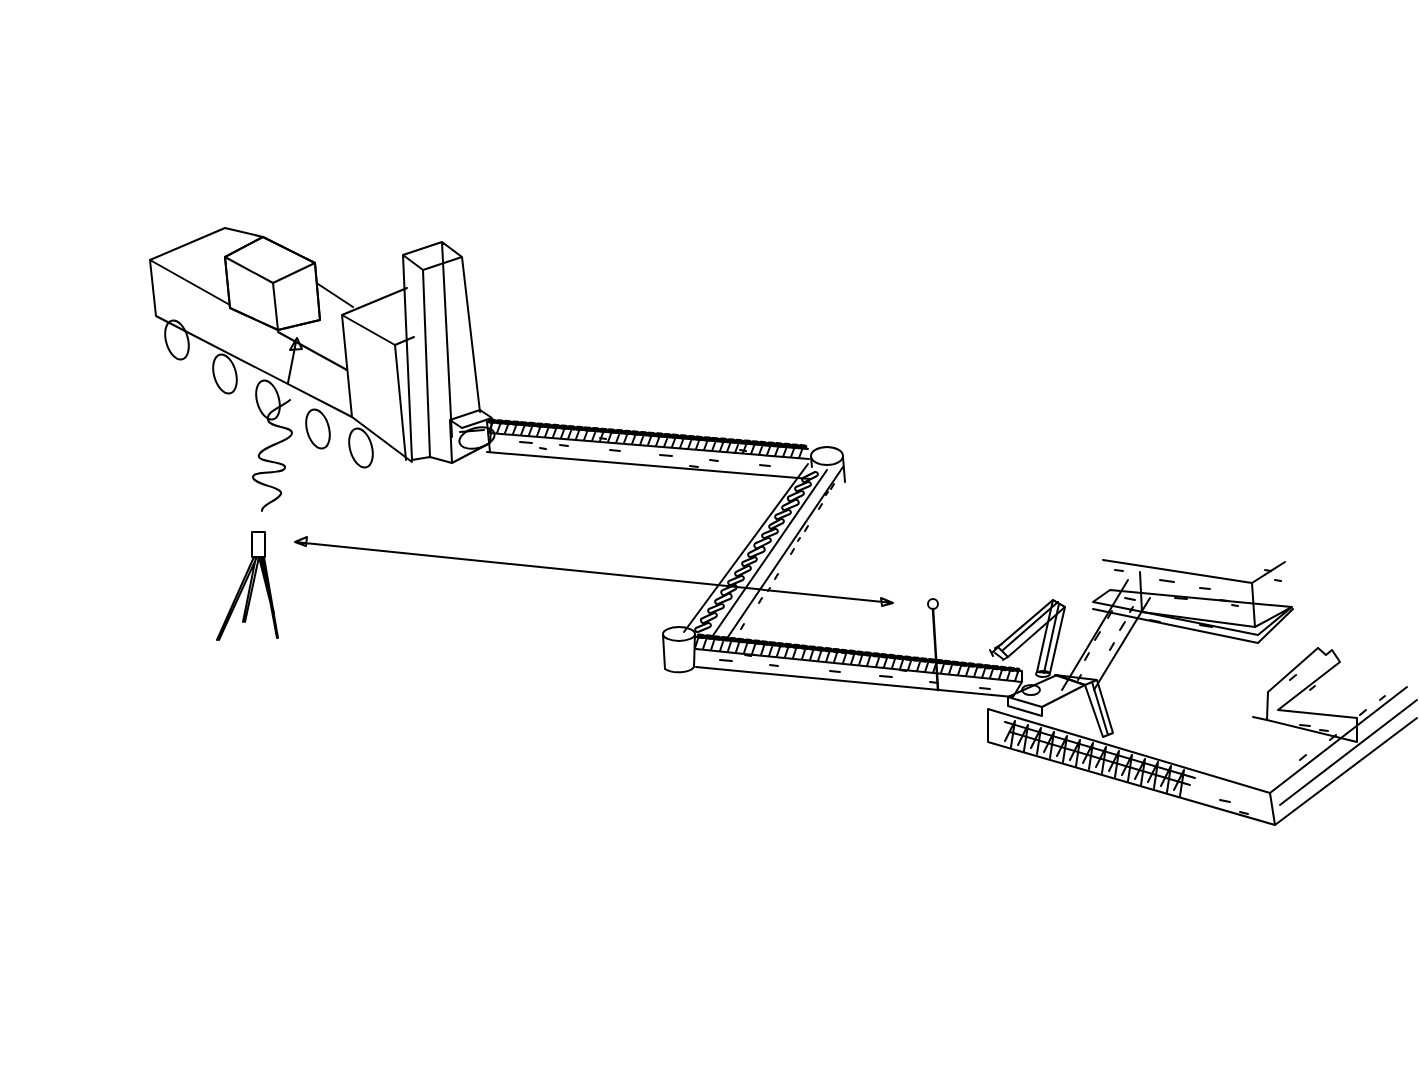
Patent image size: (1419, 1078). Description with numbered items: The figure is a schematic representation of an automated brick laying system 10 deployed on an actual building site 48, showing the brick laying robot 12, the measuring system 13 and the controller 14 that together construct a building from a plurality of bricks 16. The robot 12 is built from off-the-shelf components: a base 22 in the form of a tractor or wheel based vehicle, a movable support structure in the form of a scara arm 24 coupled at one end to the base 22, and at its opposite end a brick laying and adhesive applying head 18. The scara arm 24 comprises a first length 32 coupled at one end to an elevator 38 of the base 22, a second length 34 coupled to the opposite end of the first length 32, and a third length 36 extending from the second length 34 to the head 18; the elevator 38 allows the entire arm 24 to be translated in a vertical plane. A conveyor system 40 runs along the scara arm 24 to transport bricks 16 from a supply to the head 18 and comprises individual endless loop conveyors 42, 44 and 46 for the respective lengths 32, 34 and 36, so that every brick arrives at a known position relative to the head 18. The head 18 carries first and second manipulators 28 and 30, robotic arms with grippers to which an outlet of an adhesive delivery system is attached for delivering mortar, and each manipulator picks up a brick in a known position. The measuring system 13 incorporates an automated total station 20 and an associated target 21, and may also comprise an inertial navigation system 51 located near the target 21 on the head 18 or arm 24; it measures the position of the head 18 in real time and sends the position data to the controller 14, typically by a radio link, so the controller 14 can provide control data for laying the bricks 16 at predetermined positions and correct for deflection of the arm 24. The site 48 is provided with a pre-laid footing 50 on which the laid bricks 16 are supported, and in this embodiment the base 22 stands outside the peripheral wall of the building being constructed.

The automated brick laying (ABL) system 10 is at (765, 90).
The brick laying robot 12 is at (551, 190).
The measuring system 13 is at (209, 485).
The controller 14 is at (272, 247).
The bricks 16 is at (805, 443).
The brick laying and adhesive applying head 18 is at (1080, 559).
The automated total station (ATS) 20 is at (243, 573).
The target 21 is at (935, 597).
The base 22 is at (384, 204).
The scara arm 24 is at (895, 426).
The first manipulator 28 is at (1036, 598).
The second manipulator 30 is at (1103, 700).
The first length 32 is at (618, 458).
The second length 34 is at (797, 530).
The third length 36 is at (815, 680).
The elevator 38 is at (473, 308).
The conveyor system 40 is at (717, 498).
The endless loop conveyor 42 is at (552, 452).
The endless loop conveyor 44 is at (848, 458).
The endless loop conveyor 46 is at (763, 658).
The site 48 is at (1386, 597).
The pre-laid footing 50 is at (1207, 613).
The inertial navigation system 51 is at (1037, 660).